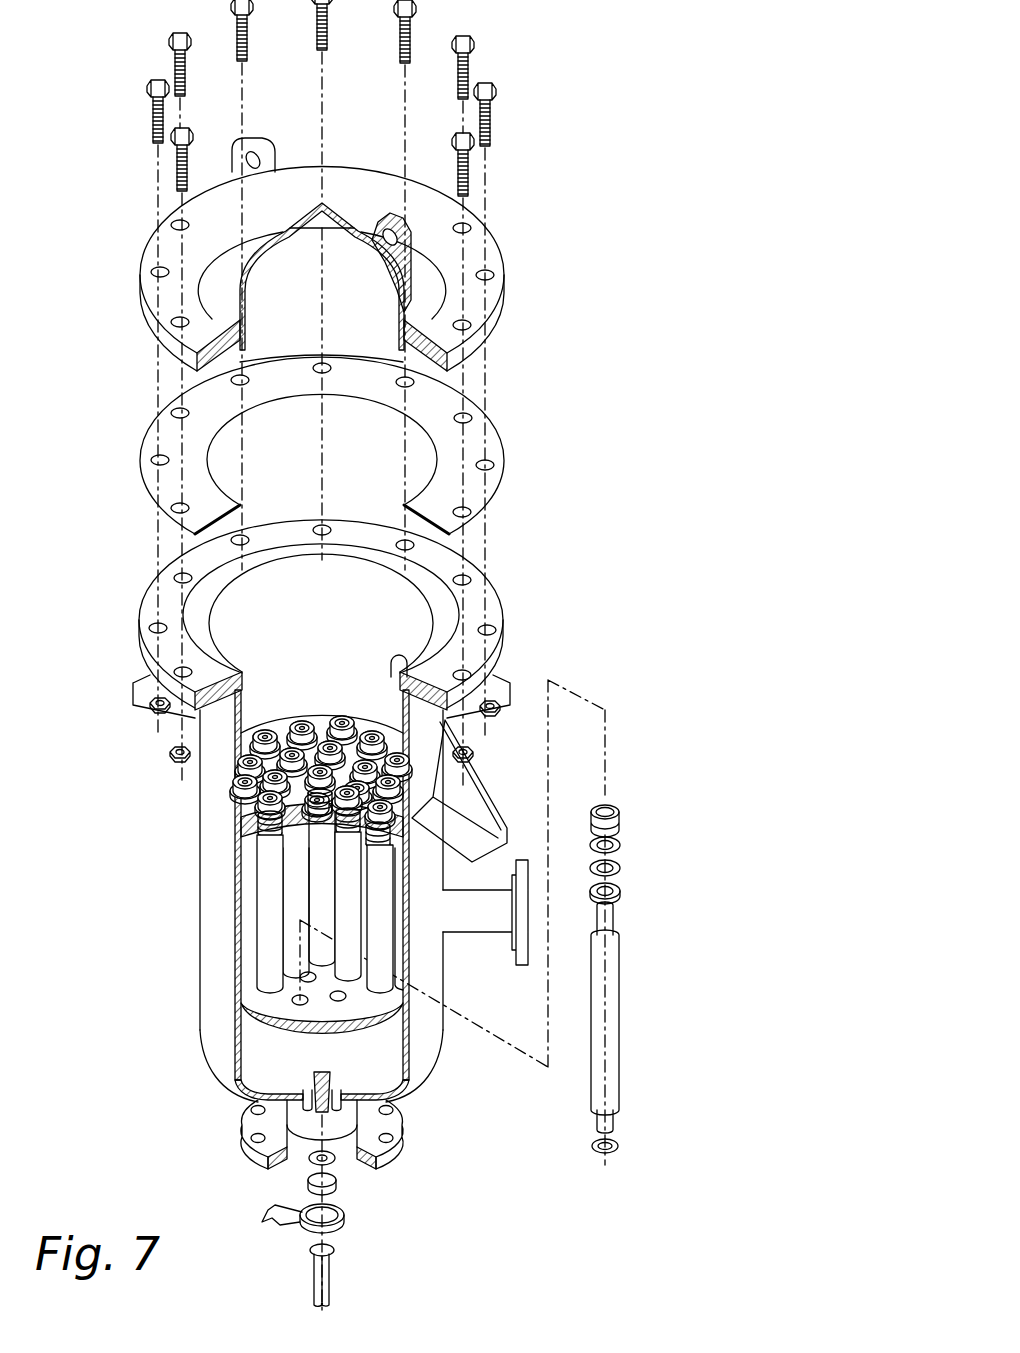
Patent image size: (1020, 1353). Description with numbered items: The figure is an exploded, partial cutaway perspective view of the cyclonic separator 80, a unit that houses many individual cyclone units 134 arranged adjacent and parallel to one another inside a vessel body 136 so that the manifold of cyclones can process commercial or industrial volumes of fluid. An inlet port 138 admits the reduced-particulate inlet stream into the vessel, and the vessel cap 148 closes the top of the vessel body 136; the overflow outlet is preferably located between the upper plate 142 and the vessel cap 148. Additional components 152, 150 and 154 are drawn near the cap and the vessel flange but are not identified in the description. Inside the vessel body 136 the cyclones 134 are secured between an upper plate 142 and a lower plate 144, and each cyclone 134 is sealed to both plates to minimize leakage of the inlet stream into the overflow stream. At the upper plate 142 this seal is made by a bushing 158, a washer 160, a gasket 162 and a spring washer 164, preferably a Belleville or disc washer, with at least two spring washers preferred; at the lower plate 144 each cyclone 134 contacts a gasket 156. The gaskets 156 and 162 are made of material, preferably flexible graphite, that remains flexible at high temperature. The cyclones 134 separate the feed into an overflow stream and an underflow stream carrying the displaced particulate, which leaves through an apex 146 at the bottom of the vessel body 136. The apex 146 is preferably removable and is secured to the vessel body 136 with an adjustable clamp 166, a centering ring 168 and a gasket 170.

The cyclonic separator 80 is at (523, 566).
The bolts 152 is at (493, 86).
The vessel cap 148 is at (485, 300).
The gasket 150 is at (497, 432).
The nuts 154 is at (172, 750).
The inlet port 138 is at (535, 858).
The upper plate 142 is at (243, 846).
The cyclone units 134 is at (270, 905).
The vessel body 136 is at (243, 965).
The lower plate 144 is at (355, 1045).
The bushing 158 is at (620, 815).
The washer 160 is at (620, 845).
The gasket 162 is at (620, 872).
The spring washer 164 is at (620, 897).
The gasket 156 is at (620, 1150).
The gasket 170 is at (335, 1160).
The centering ring 168 is at (337, 1183).
The adjustable clamp 166 is at (345, 1220).
The apex 146 is at (333, 1290).